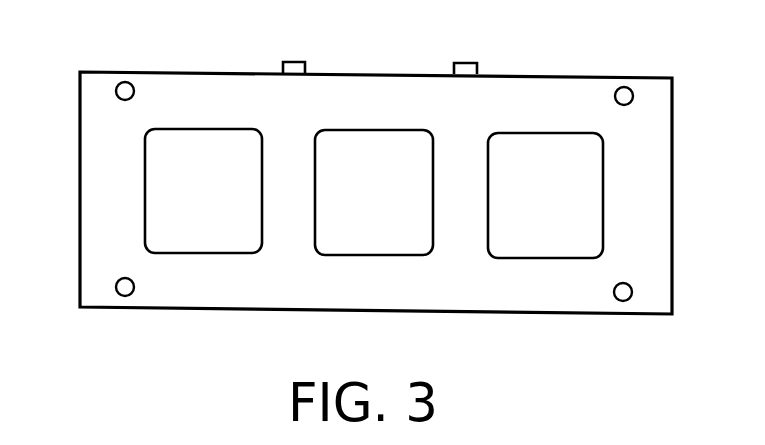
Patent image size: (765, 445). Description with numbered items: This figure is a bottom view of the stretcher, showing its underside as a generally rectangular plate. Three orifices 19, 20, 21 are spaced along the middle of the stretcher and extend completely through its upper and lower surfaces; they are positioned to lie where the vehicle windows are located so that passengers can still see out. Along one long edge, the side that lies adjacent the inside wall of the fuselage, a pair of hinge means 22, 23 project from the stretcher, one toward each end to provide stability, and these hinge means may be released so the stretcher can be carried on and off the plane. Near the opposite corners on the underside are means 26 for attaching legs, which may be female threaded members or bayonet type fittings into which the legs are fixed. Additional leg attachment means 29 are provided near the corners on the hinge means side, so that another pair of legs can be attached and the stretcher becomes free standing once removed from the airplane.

The orifice 19 is at (202, 128).
The orifice 20 is at (370, 130).
The orifice 21 is at (542, 133).
The hinge means 22 is at (295, 62).
The hinge means 23 is at (467, 30).
The means for attaching legs 26 is at (127, 296).
The additional leg attachment means 29 is at (125, 82).